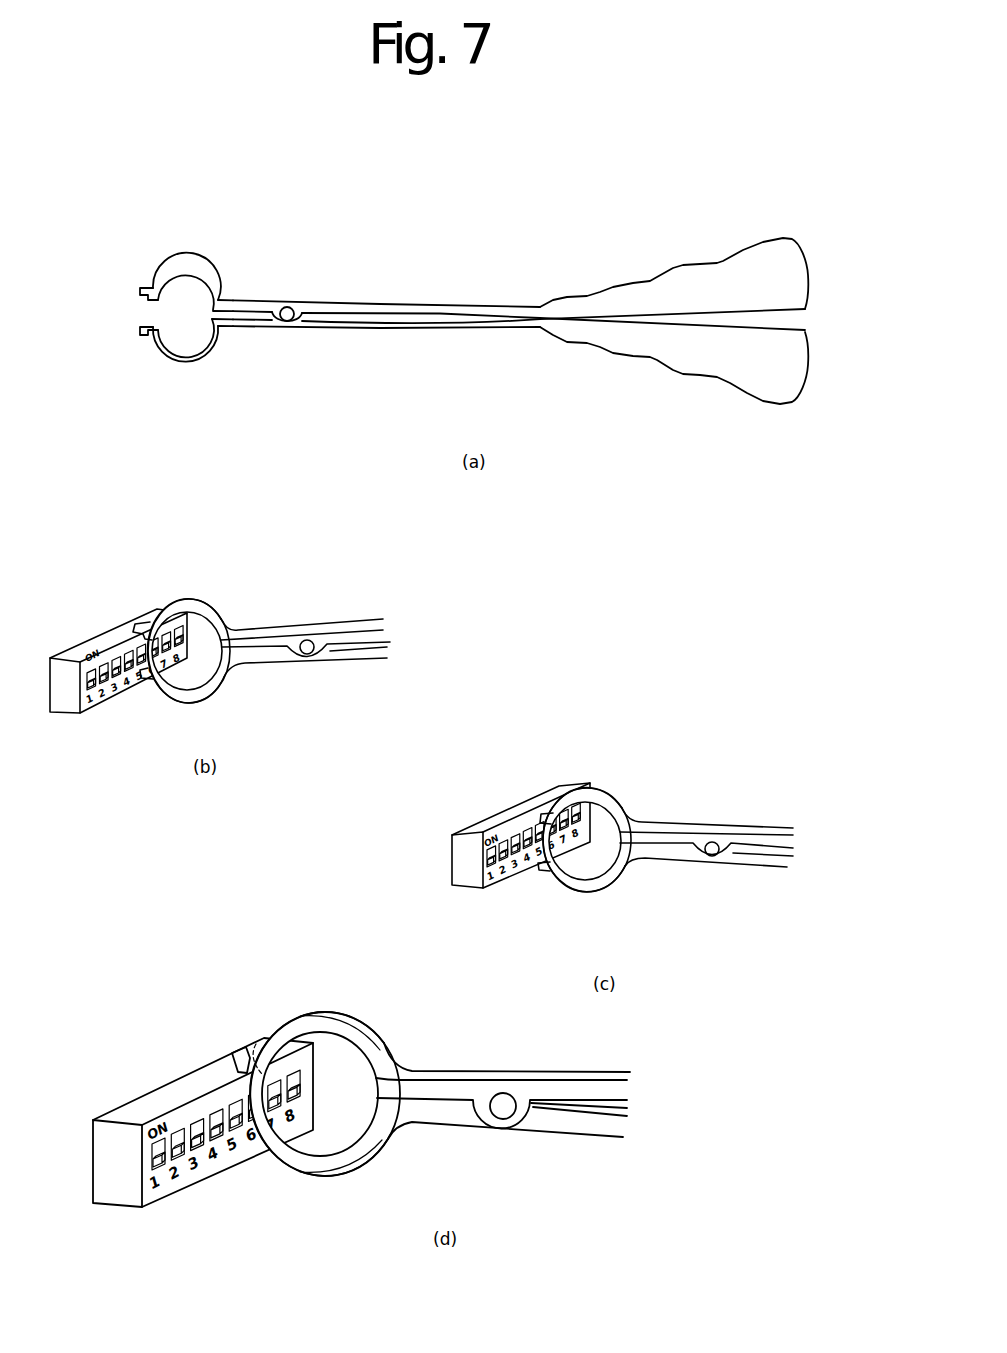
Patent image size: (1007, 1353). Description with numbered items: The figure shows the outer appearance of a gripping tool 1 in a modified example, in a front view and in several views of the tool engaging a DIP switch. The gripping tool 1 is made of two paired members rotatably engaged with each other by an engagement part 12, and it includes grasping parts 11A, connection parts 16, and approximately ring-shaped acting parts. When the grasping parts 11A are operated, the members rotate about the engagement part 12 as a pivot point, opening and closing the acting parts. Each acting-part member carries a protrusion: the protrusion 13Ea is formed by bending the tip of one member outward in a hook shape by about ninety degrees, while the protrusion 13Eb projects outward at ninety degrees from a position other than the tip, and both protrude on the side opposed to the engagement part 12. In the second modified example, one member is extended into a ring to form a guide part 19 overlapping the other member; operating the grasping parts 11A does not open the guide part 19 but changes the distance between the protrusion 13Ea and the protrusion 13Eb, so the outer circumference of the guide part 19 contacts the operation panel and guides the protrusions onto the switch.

The gripping tool 1 is at (119, 143).
The grasping parts 11A is at (700, 263).
The engagement part 12 is at (284, 323).
The protrusion 13Ea is at (140, 330).
The protrusion 13Eb is at (139, 288).
The connection parts 16 is at (541, 197).
The guide part 19 is at (268, 1043).